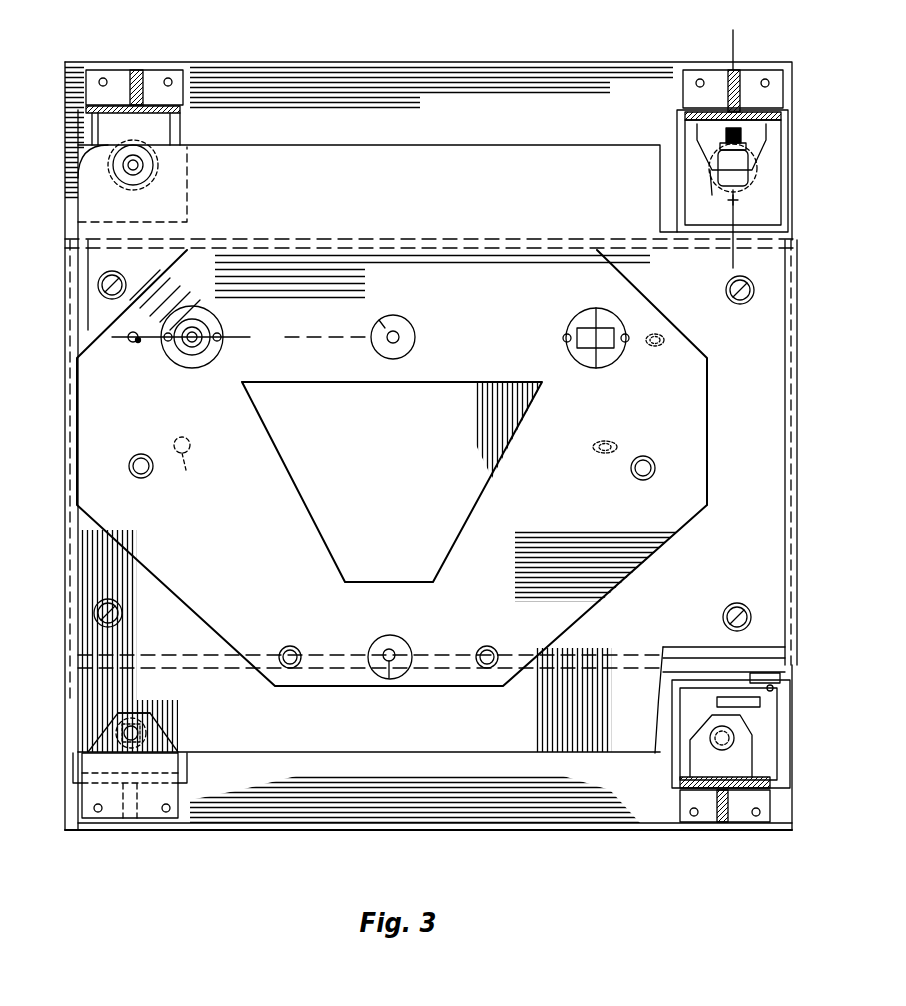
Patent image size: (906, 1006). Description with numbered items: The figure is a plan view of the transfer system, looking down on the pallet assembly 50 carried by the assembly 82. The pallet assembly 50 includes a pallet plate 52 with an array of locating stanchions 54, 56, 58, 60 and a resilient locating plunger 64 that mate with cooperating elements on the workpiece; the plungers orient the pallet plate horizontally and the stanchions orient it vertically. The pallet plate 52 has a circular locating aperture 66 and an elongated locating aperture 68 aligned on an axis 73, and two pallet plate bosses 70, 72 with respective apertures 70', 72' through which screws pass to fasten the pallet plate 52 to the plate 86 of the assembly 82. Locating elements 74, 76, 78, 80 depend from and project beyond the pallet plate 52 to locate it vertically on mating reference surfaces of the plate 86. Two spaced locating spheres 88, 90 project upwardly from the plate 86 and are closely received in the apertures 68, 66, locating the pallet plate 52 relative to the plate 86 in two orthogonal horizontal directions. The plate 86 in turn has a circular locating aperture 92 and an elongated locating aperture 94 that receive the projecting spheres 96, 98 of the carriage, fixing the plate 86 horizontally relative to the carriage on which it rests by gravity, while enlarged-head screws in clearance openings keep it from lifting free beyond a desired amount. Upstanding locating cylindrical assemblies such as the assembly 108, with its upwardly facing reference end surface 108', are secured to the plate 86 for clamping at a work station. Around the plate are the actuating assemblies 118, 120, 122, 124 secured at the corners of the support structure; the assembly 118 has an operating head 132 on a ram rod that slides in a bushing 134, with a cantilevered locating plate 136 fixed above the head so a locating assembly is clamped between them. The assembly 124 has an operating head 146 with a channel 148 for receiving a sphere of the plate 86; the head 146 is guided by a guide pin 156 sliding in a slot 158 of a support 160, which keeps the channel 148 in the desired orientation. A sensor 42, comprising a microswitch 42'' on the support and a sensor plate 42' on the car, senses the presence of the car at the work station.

The sensor 42 is at (710, 687).
The sensor plate 42' is at (765, 650).
The microswitch 42'' is at (689, 691).
The pallet assembly 50 is at (720, 453).
The pallet plate 52 is at (708, 499).
The locating stanchion 54 is at (141, 478).
The locating stanchion 56 is at (290, 646).
The locating stanchion 58 is at (490, 646).
The locating stanchion 60 is at (643, 480).
The resilient locating plunger 64 is at (596, 308).
The circular locating aperture 66 is at (130, 342).
The elongated locating aperture 68 is at (660, 346).
The pallet plate boss 70 is at (407, 324).
The aperture 70' is at (426, 348).
The pallet plate boss 72 is at (407, 643).
The aperture 72' is at (369, 634).
The axis 73 is at (258, 336).
The locating element 74 is at (192, 366).
The locating element 76 is at (597, 369).
The locating element 78 is at (375, 324).
The locating element 80 is at (391, 688).
The assembly 82 is at (555, 772).
The plate 86 is at (412, 755).
The locating sphere 88 is at (662, 333).
The locating sphere 90 is at (141, 343).
The circular locating aperture 92 is at (187, 472).
The elongated locating aperture 94 is at (592, 458).
The projecting sphere 96 is at (190, 452).
The projecting sphere 98 is at (620, 447).
The locating cylindrical assembly 108 is at (153, 181).
The reference end surface 108' is at (178, 181).
The actuating assembly 118 is at (182, 727).
The actuating assembly 120 is at (200, 117).
The actuating assembly 122 is at (700, 746).
The actuating assembly 124 is at (718, 98).
The operating head 132 is at (710, 738).
The bushing 134 is at (700, 775).
The cantilevered locating plate 136 is at (115, 815).
The operating head 146 is at (748, 211).
The channel 148 is at (700, 198).
The guide pin 156 is at (722, 143).
The slot 158 is at (724, 134).
The support 160 is at (690, 116).